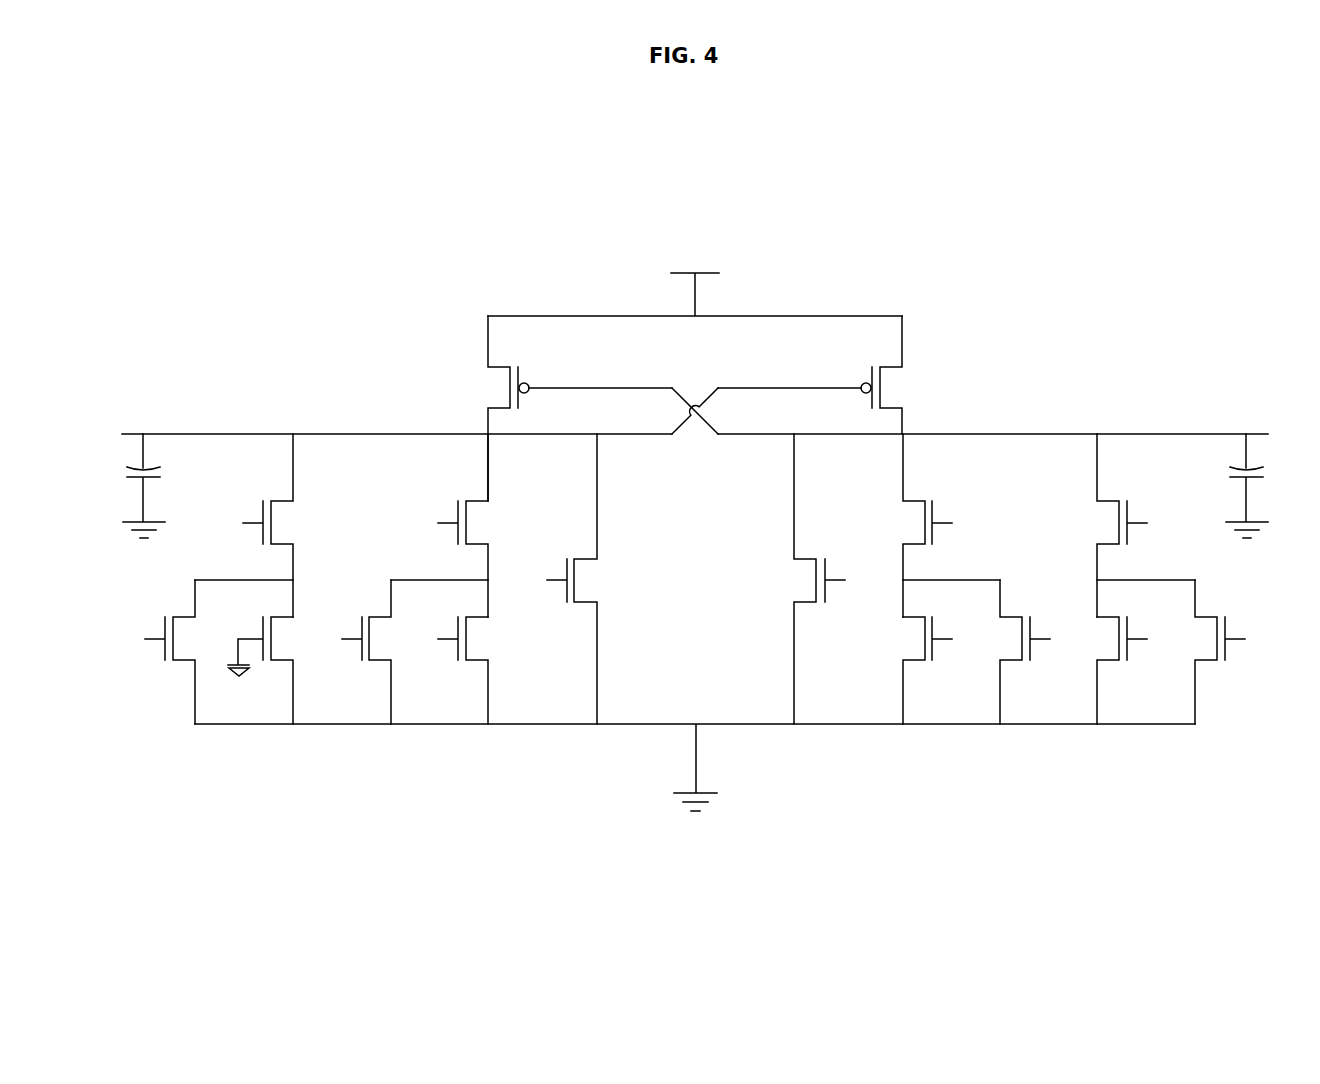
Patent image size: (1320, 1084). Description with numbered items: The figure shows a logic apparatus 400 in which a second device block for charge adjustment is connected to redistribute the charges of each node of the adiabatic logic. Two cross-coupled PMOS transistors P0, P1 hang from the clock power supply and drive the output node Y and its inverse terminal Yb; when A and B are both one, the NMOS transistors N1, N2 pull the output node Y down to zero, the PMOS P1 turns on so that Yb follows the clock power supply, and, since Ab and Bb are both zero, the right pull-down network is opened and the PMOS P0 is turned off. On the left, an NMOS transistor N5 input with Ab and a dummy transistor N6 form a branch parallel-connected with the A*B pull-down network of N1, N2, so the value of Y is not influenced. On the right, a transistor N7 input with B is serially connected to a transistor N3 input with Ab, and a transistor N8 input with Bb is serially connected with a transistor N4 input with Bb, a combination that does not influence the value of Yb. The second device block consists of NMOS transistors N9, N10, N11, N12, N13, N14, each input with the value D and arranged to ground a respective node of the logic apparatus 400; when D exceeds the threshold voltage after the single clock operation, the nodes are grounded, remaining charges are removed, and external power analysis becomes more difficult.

The logic apparatus 400 is at (255, 255).
The PMOS transistor P0 is at (575, 408).
The PMOS transistor P1 is at (816, 375).
The NMOS transistor N1 is at (461, 525).
The NMOS transistor N2 is at (462, 670).
The transistor input with Ab N3 is at (929, 669).
The transistor input with Bb N4 is at (1126, 669).
The NMOS transistor N5 is at (259, 525).
The dummy transistor N6 is at (267, 670).
The transistor input with B N7 is at (928, 525).
The transistor input with Bb N8 is at (1134, 525).
The NMOS transistor N9 is at (569, 579).
The NMOS transistor N10 is at (817, 579).
The NMOS transistor N11 is at (173, 652).
The NMOS transistor N12 is at (369, 652).
The NMOS transistor N13 is at (1023, 652).
The NMOS transistor N14 is at (1219, 652).